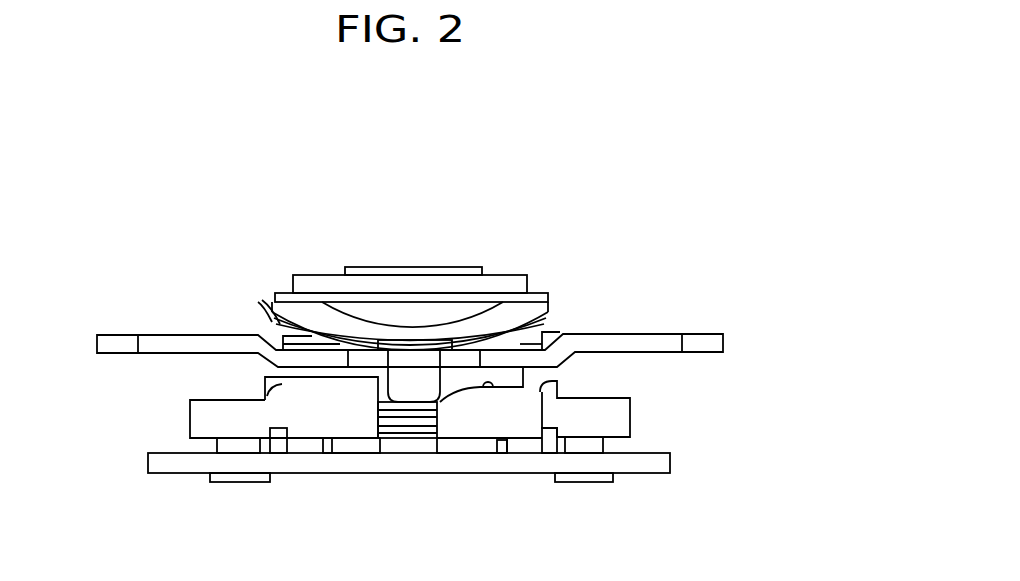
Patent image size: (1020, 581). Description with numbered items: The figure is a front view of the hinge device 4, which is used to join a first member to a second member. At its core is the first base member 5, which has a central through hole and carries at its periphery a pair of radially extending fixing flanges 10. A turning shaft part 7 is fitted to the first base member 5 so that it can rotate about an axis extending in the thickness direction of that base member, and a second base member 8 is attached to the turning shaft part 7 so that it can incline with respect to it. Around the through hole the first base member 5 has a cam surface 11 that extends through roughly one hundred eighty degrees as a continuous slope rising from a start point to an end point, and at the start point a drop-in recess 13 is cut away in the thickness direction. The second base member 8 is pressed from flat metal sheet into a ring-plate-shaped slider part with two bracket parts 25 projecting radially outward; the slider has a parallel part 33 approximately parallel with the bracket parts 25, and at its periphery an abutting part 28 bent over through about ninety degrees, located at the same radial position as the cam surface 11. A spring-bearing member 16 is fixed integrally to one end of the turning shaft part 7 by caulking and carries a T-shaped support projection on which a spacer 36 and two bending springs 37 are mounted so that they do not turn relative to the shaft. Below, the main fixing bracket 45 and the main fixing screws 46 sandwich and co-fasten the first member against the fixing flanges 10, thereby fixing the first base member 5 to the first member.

The hinge device 4 is at (714, 211).
The first base member 5 is at (523, 435).
The turning shaft part 7 is at (415, 322).
The second base member 8 is at (563, 362).
The fixing flanges 10 is at (198, 420).
The cam surface 11 is at (478, 388).
The drop-in recess 13 is at (390, 437).
The spring-bearing member 16 is at (503, 285).
The bracket parts 25 is at (177, 343).
The abutting part 28 is at (415, 385).
The parallel part 33 is at (320, 357).
The spacer 36 is at (548, 300).
The bending springs 37 is at (258, 302).
The main fixing bracket 45 is at (672, 463).
The main fixing screws 46 is at (230, 483).